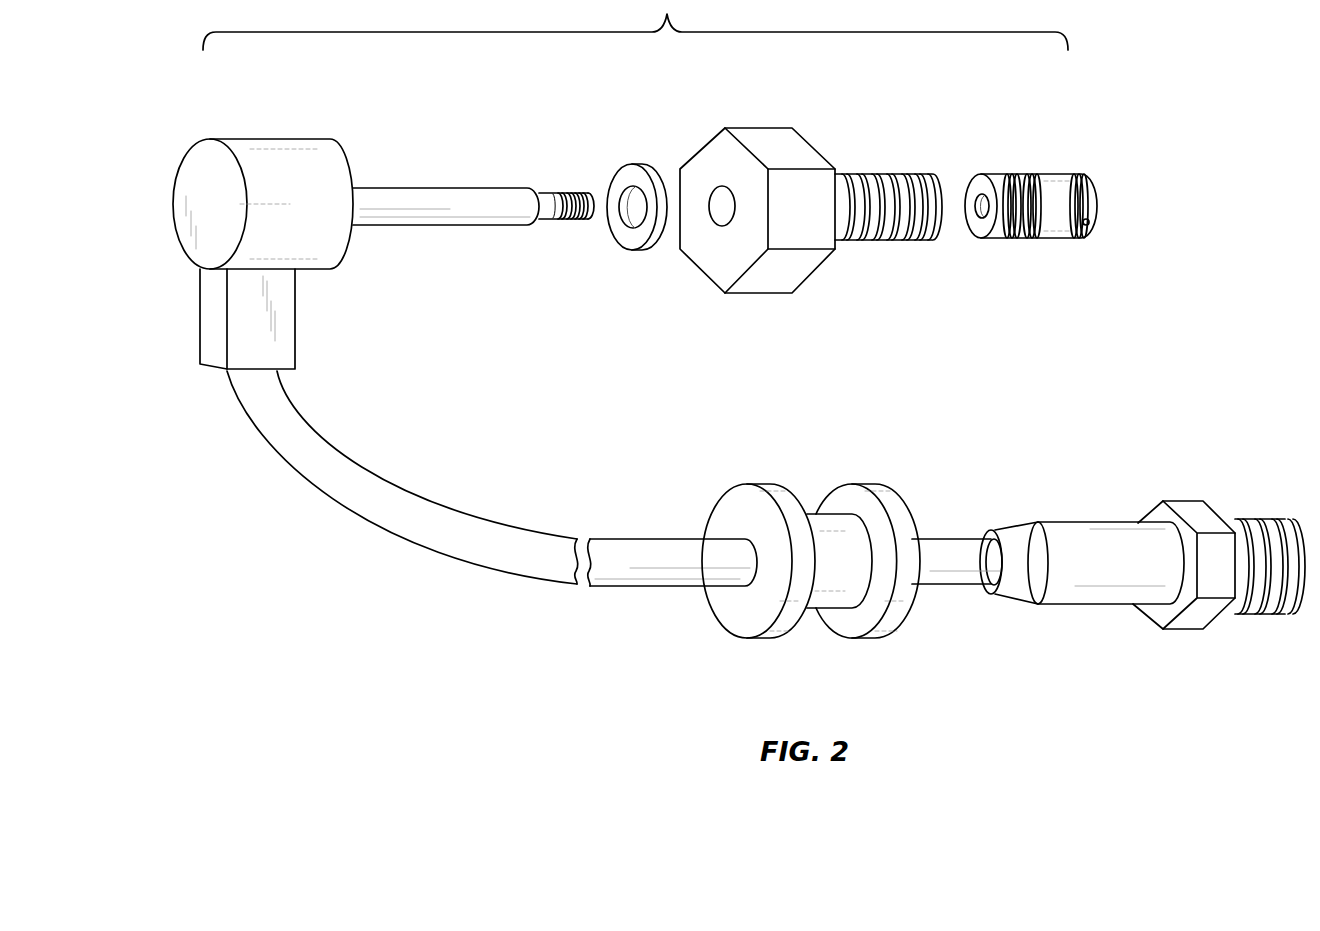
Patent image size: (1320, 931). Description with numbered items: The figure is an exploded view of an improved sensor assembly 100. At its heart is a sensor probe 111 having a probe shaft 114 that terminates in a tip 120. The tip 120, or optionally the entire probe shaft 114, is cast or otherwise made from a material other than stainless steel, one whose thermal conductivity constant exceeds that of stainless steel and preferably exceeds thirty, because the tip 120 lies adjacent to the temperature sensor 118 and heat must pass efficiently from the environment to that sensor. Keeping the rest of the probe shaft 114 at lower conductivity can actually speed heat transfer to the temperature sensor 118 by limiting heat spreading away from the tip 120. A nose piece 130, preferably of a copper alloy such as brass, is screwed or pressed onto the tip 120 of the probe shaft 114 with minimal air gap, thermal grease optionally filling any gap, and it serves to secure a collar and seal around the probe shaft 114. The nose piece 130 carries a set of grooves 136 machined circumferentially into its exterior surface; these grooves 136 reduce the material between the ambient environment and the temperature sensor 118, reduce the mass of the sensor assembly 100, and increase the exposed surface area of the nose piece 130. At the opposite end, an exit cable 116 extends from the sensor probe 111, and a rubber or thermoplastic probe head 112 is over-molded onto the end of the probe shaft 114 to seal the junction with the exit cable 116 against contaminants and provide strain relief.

The sensor assembly 100 is at (362, 534).
The sensor probe 111 is at (282, 136).
The probe head 112 is at (265, 251).
The probe shaft 114 is at (496, 184).
The exit cable 116 is at (497, 527).
The temperature sensor 118 is at (516, 200).
The tip 120 is at (549, 194).
The nose piece 130 is at (1033, 214).
The grooves 136 is at (1036, 183).